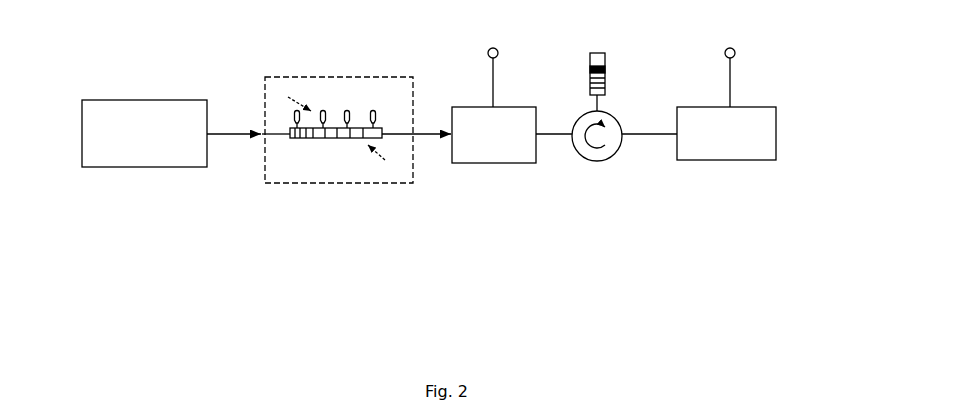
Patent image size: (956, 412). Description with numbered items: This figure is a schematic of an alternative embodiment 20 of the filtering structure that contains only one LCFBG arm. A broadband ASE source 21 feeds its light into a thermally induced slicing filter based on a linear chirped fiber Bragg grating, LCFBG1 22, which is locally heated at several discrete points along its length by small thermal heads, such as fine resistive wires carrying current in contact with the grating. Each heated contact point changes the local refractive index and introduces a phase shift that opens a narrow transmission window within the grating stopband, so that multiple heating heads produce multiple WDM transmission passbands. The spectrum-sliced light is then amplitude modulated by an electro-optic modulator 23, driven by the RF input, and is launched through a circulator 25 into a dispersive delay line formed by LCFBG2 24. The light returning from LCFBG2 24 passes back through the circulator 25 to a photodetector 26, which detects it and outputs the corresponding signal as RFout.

The microwave photonic signal generation system 20 is at (689, 258).
The broadband ASE source 21 is at (154, 173).
The LCFBG1 22 is at (367, 194).
The electro-optic modulator 23 is at (499, 174).
The LCFBG2 24 is at (592, 67).
The circulator 25 is at (598, 173).
The photodetector 26 is at (722, 174).